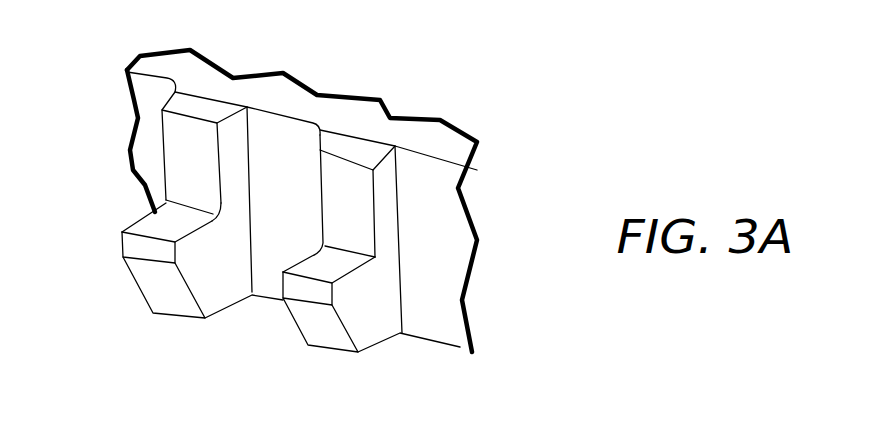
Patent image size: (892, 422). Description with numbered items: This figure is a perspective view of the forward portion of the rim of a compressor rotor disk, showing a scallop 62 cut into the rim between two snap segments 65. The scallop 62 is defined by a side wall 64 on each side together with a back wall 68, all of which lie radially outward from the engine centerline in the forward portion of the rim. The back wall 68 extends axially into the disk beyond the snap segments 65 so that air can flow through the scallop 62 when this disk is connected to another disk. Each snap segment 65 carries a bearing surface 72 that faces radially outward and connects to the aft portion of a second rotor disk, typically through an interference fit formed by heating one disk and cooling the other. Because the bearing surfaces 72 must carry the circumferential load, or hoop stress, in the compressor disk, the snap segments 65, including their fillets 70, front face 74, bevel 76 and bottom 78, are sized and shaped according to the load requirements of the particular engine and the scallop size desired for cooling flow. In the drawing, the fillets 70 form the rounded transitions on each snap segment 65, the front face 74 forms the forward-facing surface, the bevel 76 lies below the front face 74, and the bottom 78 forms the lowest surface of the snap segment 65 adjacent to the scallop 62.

The scallop 62 is at (268, 328).
The side wall 64 is at (212, 275).
The snap segment 65 is at (140, 182).
The back wall 68 is at (290, 135).
The fillet 70 is at (193, 197).
The bearing surface 72 is at (165, 223).
The front face 74 is at (137, 247).
The bevel 76 is at (153, 280).
The bottom 78 is at (374, 355).